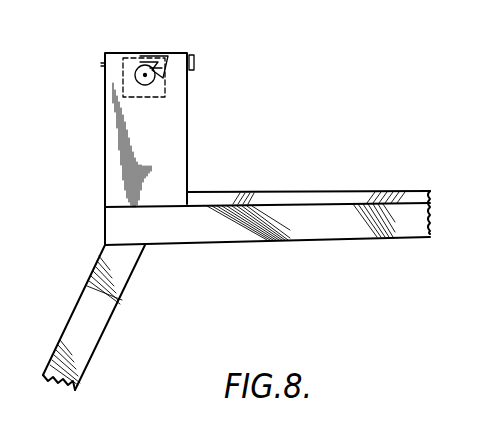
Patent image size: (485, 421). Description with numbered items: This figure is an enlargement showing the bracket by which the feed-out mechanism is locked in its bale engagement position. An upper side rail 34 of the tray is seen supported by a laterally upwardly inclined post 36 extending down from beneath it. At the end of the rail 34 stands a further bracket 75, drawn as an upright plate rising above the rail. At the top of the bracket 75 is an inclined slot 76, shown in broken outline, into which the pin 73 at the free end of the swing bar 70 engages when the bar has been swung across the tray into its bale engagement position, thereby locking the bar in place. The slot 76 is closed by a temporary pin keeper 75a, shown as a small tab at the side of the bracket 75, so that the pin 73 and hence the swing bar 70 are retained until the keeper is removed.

The upper side rail 34 is at (308, 228).
The laterally upwardly inclined post 36 is at (97, 308).
The swing bar 70 is at (123, 100).
The pin 73 is at (148, 77).
The bracket 75 is at (170, 163).
The temporary pin keeper 75a is at (194, 62).
The inclined slot 76 is at (169, 55).